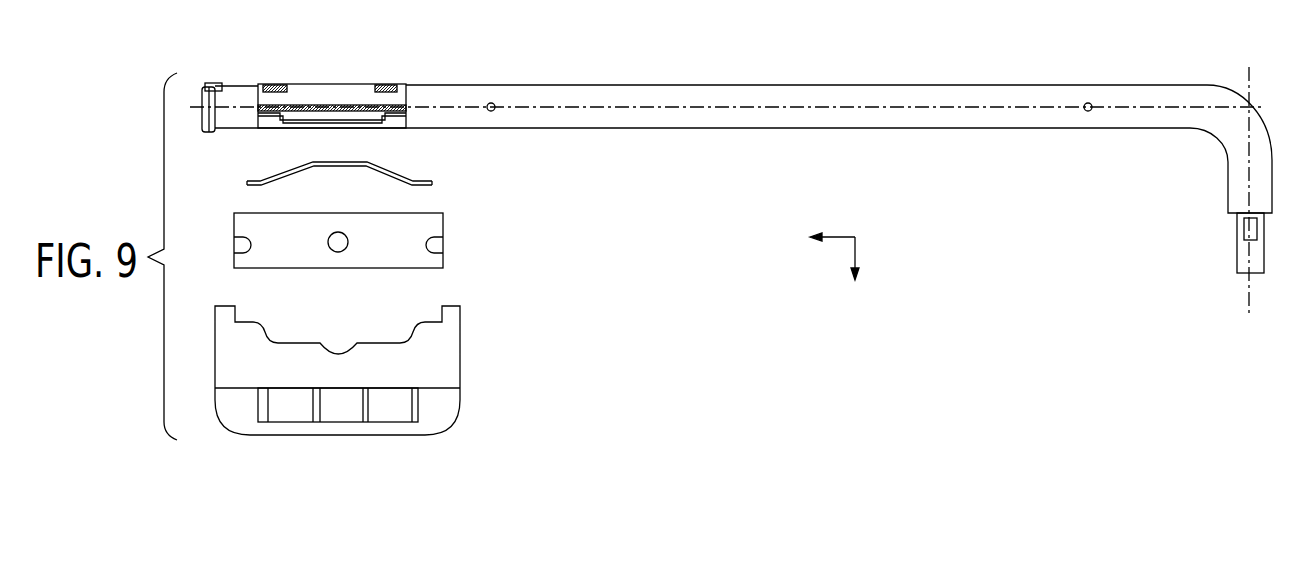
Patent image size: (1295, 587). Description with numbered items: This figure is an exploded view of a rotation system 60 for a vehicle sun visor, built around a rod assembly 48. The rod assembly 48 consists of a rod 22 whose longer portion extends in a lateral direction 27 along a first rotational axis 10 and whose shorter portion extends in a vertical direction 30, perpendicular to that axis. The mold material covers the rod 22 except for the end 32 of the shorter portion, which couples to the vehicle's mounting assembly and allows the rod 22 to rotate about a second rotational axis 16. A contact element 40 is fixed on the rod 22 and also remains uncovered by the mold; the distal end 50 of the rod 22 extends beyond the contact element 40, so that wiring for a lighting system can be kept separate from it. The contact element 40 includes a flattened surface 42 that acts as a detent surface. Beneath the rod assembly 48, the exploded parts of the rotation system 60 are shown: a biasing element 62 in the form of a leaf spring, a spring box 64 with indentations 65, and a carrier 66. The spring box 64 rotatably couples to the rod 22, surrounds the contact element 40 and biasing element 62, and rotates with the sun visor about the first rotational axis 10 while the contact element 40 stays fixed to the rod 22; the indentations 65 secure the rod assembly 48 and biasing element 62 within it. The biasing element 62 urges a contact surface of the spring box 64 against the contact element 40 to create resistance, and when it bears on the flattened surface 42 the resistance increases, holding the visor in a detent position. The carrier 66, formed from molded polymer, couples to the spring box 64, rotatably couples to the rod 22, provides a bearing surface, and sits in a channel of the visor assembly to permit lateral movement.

The first rotational axis 10 is at (731, 118).
The second rotational axis 16 is at (1245, 85).
The rod 22 is at (540, 79).
The lateral direction 27 is at (838, 240).
The vertical direction 30 is at (858, 255).
The end 32 is at (1243, 273).
The contact element 40 is at (358, 112).
The flattened surface 42 is at (322, 85).
The rod assembly 48 is at (345, 77).
The distal end 50 is at (210, 84).
The rotation system 60 is at (349, 336).
The biasing element 62 is at (432, 183).
The spring box 64 is at (342, 234).
The indentations 65 is at (228, 247).
The carrier 66 is at (206, 452).